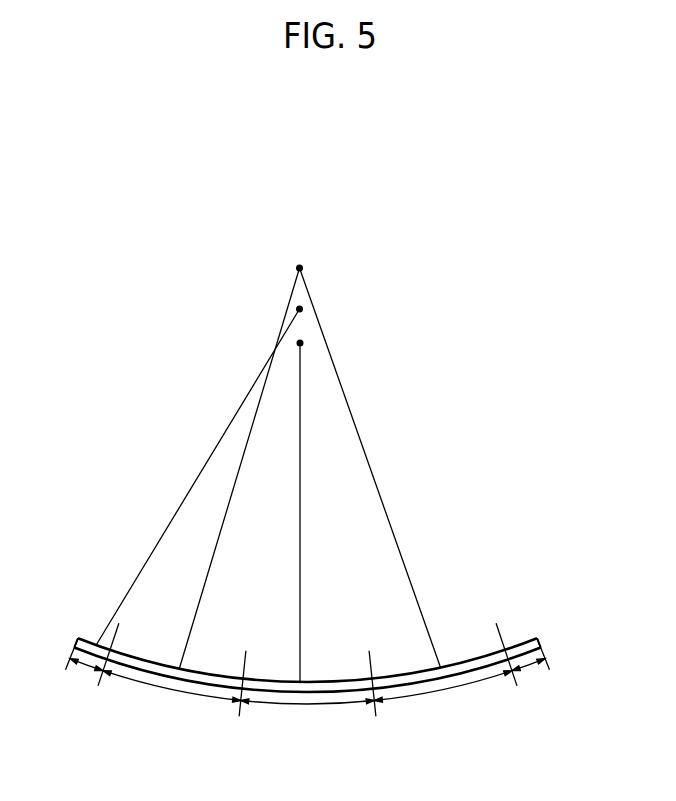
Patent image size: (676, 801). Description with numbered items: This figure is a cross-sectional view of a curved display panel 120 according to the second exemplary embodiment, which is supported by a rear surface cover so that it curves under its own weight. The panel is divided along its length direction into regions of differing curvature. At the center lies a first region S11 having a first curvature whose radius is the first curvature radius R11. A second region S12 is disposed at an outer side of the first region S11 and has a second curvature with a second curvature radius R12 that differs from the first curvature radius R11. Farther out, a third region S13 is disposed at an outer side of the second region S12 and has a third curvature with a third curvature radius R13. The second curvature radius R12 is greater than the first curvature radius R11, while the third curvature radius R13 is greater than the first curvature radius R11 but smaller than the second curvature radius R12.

The curved display panel 120 is at (475, 659).
The first region S11 is at (308, 718).
The second region S12 is at (307, 689).
The third region S13 is at (307, 663).
The first curvature radius R11 is at (319, 511).
The second curvature radius R12 is at (310, 467).
The third curvature radius R13 is at (199, 476).